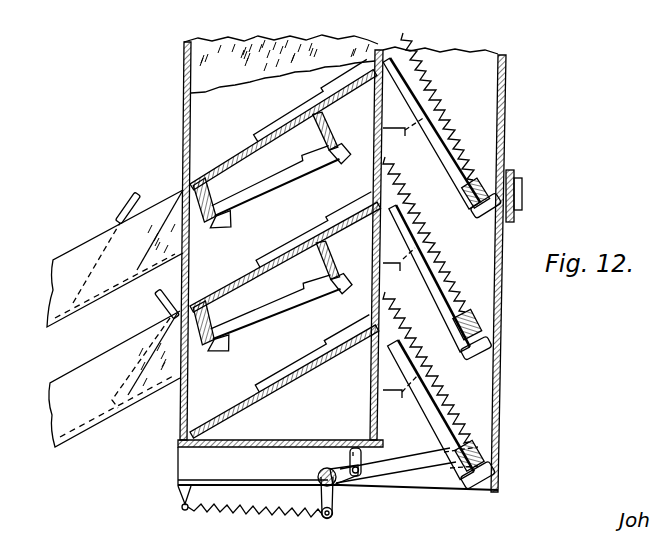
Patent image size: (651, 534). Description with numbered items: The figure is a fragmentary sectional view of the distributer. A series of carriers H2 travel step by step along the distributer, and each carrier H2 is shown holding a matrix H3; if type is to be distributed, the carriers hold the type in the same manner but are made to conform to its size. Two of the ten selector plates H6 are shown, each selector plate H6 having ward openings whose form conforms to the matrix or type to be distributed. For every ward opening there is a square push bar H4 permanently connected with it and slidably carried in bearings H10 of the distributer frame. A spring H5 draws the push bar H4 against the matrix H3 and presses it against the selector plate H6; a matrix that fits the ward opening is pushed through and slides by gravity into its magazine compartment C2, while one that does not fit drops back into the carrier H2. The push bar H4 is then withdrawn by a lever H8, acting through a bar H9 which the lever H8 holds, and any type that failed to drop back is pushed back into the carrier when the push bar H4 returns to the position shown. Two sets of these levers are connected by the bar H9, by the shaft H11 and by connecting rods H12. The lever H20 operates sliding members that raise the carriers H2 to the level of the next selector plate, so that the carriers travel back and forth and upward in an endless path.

The magazine compartment C2 is at (86, 260).
The carrier H2 is at (223, 236).
The matrix H3 is at (269, 200).
The push bar H4 is at (279, 121).
The spring H5 is at (448, 120).
The selector plate H6 is at (207, 172).
The lever H8 is at (413, 468).
The bar H9 is at (466, 200).
The bearing H10 is at (394, 154).
The shaft H11 is at (318, 476).
The connecting rod H12 is at (350, 455).
The lever H20 is at (521, 172).